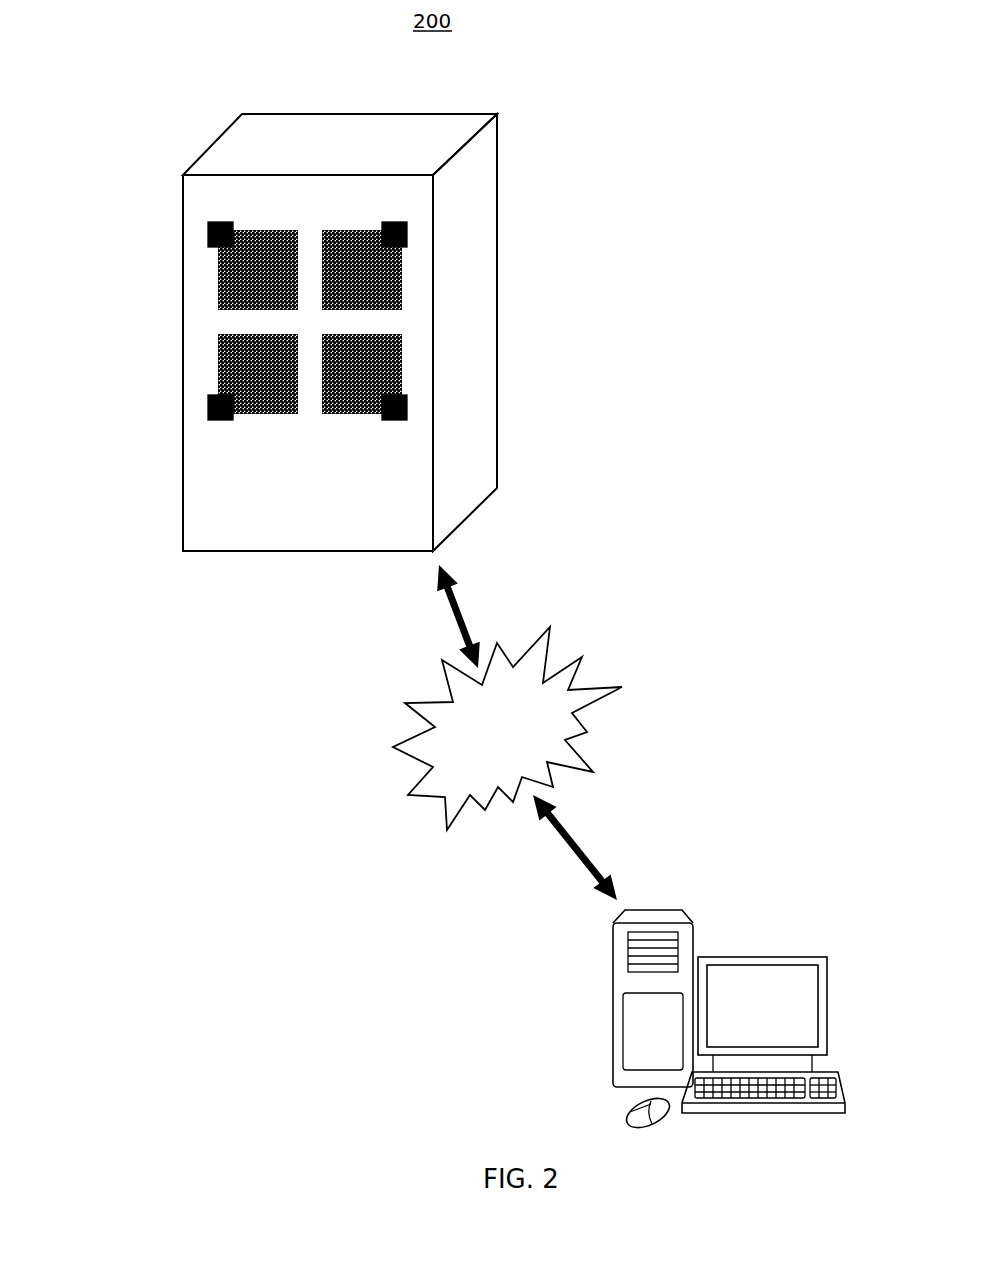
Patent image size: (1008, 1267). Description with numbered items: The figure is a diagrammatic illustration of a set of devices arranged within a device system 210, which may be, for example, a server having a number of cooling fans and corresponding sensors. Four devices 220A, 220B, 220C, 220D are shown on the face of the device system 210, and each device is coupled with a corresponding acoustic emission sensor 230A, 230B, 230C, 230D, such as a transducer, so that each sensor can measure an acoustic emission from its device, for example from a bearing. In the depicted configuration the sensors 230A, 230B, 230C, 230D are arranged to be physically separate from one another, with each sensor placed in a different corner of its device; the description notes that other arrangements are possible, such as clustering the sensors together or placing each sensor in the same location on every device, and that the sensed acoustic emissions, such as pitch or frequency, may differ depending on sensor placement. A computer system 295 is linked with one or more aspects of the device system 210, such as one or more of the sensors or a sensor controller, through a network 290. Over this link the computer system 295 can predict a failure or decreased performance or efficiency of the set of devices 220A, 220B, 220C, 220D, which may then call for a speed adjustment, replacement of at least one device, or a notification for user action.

The device system 210 is at (499, 125).
The device 220A is at (284, 280).
The device 220B is at (388, 280).
The device 220C is at (284, 378).
The device 220D is at (388, 378).
The acoustic emission sensor 230A is at (208, 241).
The acoustic emission sensor 230B is at (407, 235).
The acoustic emission sensor 230C is at (208, 413).
The acoustic emission sensor 230D is at (407, 407).
The network 290 is at (479, 755).
The computer system 295 is at (696, 937).